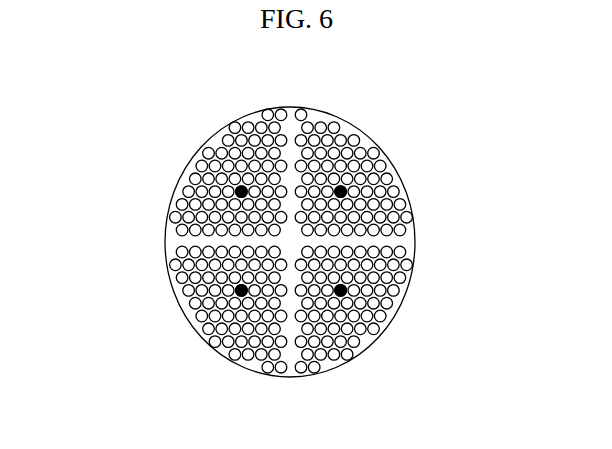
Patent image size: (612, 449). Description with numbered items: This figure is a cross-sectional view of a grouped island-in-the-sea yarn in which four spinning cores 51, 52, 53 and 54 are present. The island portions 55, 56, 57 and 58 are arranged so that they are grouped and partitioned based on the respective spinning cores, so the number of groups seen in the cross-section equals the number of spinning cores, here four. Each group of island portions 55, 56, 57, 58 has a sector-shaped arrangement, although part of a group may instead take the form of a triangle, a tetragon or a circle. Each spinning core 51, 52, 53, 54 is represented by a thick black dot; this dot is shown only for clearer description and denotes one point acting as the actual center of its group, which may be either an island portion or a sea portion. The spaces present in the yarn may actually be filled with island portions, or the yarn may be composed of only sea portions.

The spinning core 51 is at (236, 190).
The spinning core 52 is at (346, 190).
The spinning core 53 is at (236, 293).
The spinning core 54 is at (346, 293).
The island portions 55 is at (212, 141).
The island portions 56 is at (358, 142).
The island portions 57 is at (224, 325).
The island portions 58 is at (357, 338).